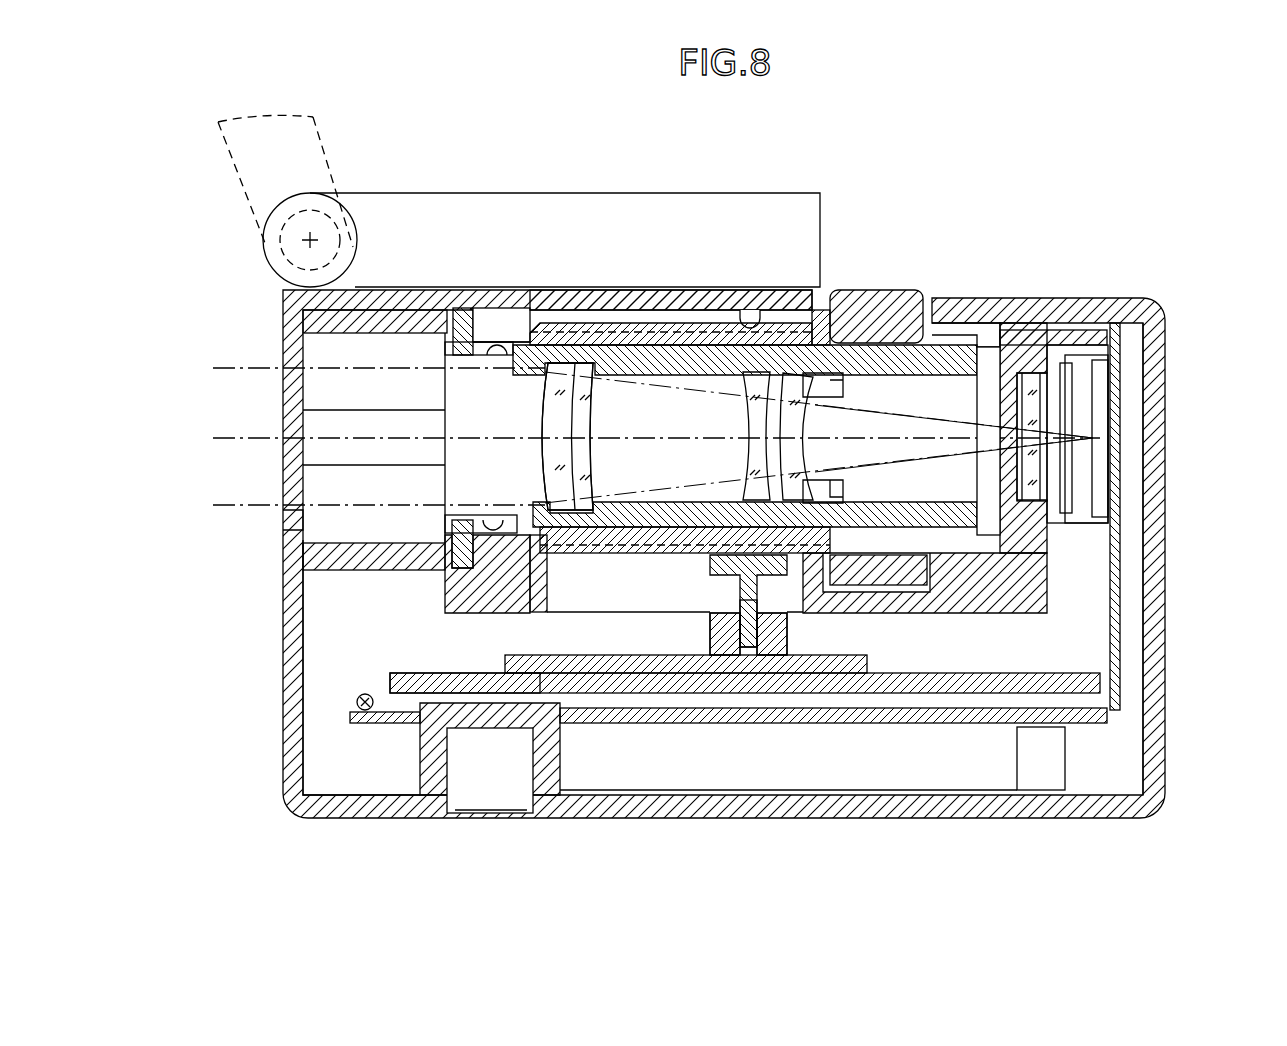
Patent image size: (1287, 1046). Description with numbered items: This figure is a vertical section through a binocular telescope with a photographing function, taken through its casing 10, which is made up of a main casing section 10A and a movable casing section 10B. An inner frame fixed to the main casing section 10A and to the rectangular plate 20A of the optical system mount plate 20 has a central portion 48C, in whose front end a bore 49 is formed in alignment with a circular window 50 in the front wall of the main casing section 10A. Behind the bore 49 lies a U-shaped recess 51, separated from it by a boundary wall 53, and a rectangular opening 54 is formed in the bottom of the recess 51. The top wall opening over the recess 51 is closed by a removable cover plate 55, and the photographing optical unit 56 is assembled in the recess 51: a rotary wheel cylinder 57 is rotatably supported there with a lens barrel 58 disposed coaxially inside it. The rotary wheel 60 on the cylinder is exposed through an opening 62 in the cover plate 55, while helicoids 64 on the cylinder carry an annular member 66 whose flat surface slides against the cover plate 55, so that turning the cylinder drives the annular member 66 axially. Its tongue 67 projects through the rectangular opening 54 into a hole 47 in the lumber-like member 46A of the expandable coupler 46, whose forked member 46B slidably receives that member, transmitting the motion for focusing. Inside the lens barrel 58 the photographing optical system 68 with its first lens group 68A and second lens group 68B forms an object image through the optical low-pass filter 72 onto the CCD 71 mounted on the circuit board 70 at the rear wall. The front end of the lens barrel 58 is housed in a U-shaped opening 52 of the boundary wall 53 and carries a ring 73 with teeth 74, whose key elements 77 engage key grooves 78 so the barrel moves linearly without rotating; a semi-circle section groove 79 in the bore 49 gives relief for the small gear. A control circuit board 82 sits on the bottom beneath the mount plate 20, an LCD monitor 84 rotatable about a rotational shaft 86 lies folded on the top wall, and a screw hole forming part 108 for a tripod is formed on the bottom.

The casing 10 is at (255, 315).
The main casing section 10A is at (282, 707).
The movable casing section 10B is at (1168, 507).
The optical system mount plate 20 is at (828, 695).
The rectangular plate 20A is at (418, 673).
The expandable coupler 46 is at (790, 633).
The lumber-like member 46A is at (770, 655).
The forked member 46B is at (722, 655).
The hole 47 is at (748, 618).
The central portion 48C is at (928, 618).
The bore 49 is at (337, 536).
The circular window 50 is at (297, 520).
The recess 51 is at (985, 350).
The U-shaped opening 52 is at (506, 320).
The boundary wall 53 is at (495, 600).
The rectangular opening 54 is at (545, 590).
The cover plate 55 is at (703, 303).
The photographing optical unit 56 is at (958, 345).
The rotary wheel cylinder 57 is at (627, 548).
The lens barrel 58 is at (905, 500).
The rotary wheel 60 is at (900, 290).
The opening 62 is at (822, 318).
The helicoids 64 is at (655, 320).
The annular member 66 is at (747, 302).
The tongue 67 is at (740, 572).
The photographing optical system 68 is at (522, 425).
The first lens group 68A is at (598, 410).
The second lens group 68B is at (738, 460).
The circuit board 70 is at (1110, 645).
The CCD 71 is at (1078, 530).
The optical low-pass filter 72 is at (1010, 408).
The ring 73 is at (480, 330).
The teeth 74 is at (463, 308).
The key elements 77 is at (445, 348).
The key grooves 78 is at (495, 360).
The semi-circle section groove 79 is at (337, 455).
The control circuit board 82 is at (722, 723).
The LCD monitor 84 is at (645, 192).
The rotational shaft 86 is at (315, 240).
The screw hole forming part 108 is at (428, 755).